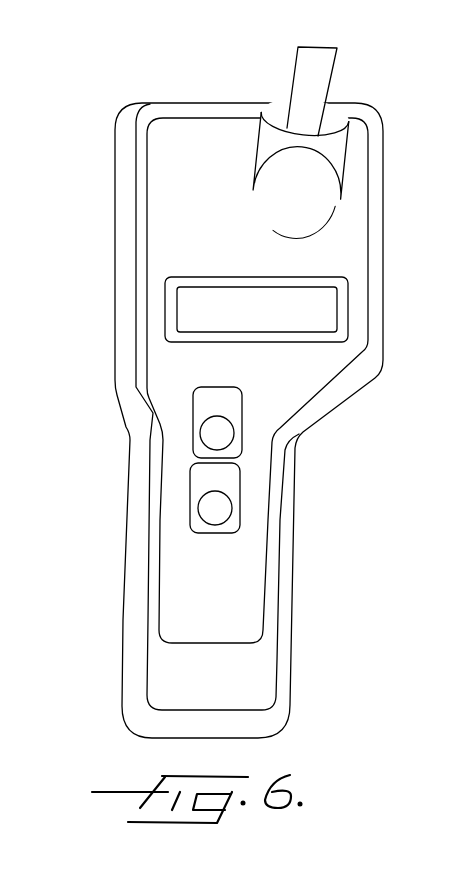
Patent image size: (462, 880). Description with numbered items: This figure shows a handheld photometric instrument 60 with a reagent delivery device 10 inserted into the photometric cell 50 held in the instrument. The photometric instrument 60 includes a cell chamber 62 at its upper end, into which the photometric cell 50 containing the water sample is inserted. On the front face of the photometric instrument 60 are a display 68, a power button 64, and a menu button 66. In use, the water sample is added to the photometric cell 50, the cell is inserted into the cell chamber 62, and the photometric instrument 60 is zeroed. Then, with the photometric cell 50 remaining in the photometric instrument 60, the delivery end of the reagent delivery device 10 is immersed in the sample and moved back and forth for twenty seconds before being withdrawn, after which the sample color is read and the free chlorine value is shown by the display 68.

The photometric instrument 60 is at (114, 104).
The reagent delivery device 10 is at (311, 68).
The photometric cell 50 is at (283, 182).
The cell chamber 62 is at (300, 244).
The display 68 is at (205, 308).
The power button 64 is at (207, 430).
The menu button 66 is at (213, 512).